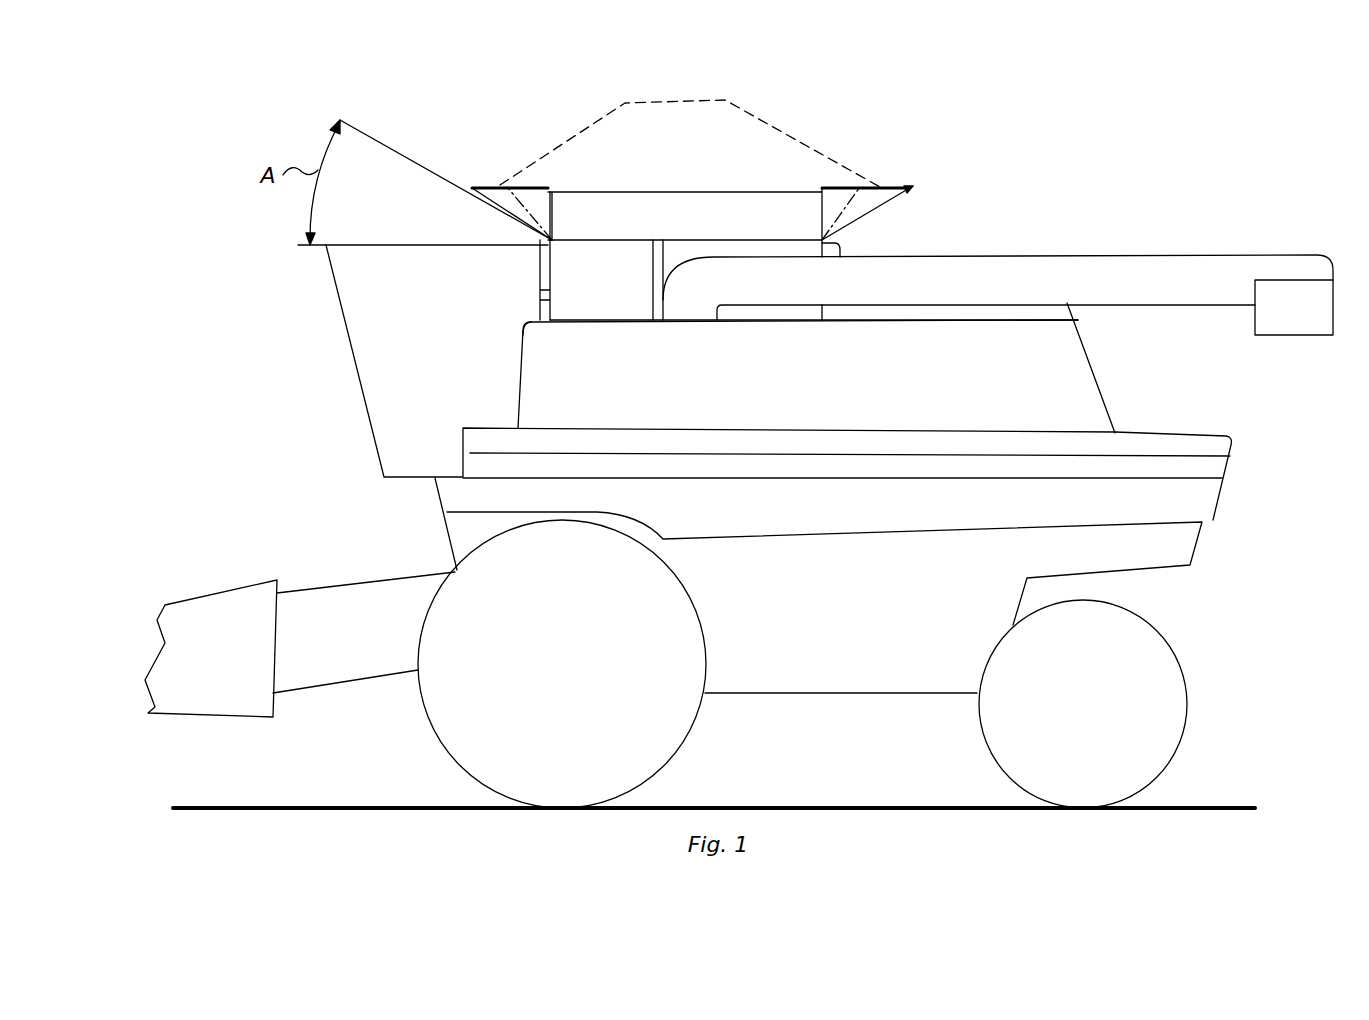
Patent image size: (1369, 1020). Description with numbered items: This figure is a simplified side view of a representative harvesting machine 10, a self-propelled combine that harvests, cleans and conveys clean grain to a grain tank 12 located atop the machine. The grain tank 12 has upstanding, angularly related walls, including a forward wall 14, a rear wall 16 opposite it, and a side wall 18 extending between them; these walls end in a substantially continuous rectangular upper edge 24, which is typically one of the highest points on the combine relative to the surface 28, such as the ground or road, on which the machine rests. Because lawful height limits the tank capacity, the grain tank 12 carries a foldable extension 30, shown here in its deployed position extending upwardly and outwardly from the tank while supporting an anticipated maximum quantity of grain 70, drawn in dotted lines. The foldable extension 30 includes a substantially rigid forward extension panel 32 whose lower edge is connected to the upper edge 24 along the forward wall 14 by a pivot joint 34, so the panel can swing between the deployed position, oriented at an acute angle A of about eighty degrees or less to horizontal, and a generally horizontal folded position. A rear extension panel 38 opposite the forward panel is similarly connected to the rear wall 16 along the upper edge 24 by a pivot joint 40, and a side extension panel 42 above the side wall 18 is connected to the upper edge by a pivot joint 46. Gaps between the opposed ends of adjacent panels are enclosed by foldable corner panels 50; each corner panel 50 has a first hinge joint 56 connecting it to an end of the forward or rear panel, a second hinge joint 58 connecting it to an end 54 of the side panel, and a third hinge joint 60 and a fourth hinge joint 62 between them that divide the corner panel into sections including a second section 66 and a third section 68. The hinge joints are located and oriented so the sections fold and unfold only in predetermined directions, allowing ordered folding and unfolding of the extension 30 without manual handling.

The harvesting machine 10 is at (337, 693).
The grain tank 12 is at (519, 332).
The forward wall 14 is at (540, 292).
The rear wall 16 is at (836, 258).
The side wall 18 is at (605, 302).
The upper edge 24 is at (667, 240).
The surface 28 is at (1224, 807).
The foldable extension 30 is at (913, 186).
The forward extension panel 32 is at (493, 207).
The pivot joint 34 is at (535, 246).
The rear extension panel 38 is at (870, 223).
The pivot joint 40 is at (853, 250).
The side extension panel 42 is at (695, 188).
The pivot joint 46 is at (600, 245).
The foldable corner panel 50 is at (507, 187).
The end 54 is at (550, 187).
The first hinge joint 56 is at (547, 241).
The second hinge joint 58 is at (556, 216).
The third hinge joint 60 is at (470, 193).
The fourth hinge joint 62 is at (517, 187).
The second section 66 is at (487, 190).
The third section 68 is at (550, 190).
The quantity of grain 70 is at (720, 100).